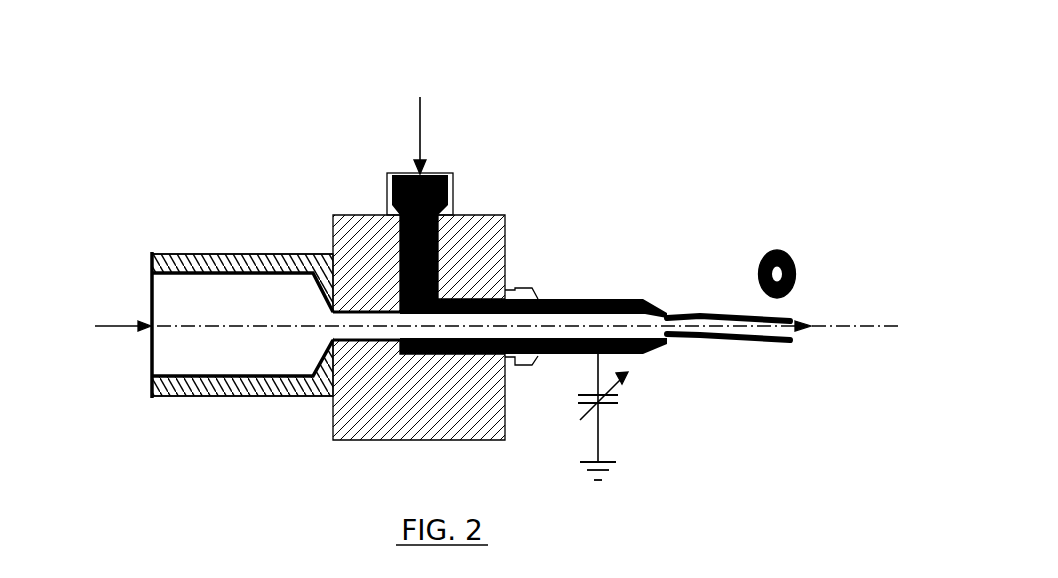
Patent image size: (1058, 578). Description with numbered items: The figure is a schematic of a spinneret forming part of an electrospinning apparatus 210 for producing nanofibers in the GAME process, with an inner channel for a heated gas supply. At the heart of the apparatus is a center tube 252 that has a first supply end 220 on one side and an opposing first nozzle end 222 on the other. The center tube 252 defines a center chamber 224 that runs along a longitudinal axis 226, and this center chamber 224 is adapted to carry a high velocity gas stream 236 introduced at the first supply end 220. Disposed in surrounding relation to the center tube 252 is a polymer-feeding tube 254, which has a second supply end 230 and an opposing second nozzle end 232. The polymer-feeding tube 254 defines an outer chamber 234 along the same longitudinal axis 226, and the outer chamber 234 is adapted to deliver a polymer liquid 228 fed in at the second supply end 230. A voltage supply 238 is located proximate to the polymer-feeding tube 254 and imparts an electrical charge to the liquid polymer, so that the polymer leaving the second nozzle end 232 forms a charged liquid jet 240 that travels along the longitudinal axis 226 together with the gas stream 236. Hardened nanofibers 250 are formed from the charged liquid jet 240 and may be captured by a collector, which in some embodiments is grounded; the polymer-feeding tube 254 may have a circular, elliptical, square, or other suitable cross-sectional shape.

The electrospinning apparatus 210 is at (627, 154).
The first supply end 220 is at (140, 365).
The first nozzle end 222 is at (655, 320).
The center chamber 224 is at (512, 335).
The longitudinal axis 226 is at (840, 328).
The polymer liquid 228 is at (421, 106).
The second supply end 230 is at (367, 159).
The second nozzle end 232 is at (633, 330).
The outer chamber 234 is at (607, 298).
The high velocity gas stream 236 is at (120, 325).
The voltage supply 238 is at (622, 437).
The charged liquid jet 240 is at (695, 338).
The hardened nanofibers 250 is at (783, 250).
The center tube 252 is at (221, 304).
The polymer-feeding tube 254 is at (566, 298).